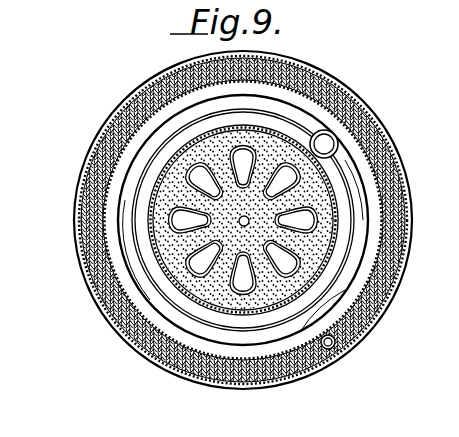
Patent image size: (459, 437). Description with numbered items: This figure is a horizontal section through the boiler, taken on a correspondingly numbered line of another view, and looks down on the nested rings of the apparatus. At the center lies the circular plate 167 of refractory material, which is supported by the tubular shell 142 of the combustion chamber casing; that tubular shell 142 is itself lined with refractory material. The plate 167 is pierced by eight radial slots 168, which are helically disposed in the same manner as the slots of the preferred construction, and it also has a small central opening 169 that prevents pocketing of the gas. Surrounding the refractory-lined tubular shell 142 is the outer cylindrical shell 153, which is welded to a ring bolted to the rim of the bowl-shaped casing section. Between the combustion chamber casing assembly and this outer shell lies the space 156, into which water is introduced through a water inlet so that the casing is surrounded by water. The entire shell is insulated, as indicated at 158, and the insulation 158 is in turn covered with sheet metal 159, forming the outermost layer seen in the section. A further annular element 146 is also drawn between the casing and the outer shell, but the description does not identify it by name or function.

The tubular shell 142 is at (328, 274).
The annular flange 146 is at (170, 311).
The cylindrical shell 153 is at (339, 348).
The space 156 is at (343, 312).
The insulation 158 is at (87, 236).
The sheet metal 159 is at (87, 273).
The circular plate 167 is at (314, 190).
The radial slots 168 is at (182, 209).
The small central opening 169 is at (247, 226).